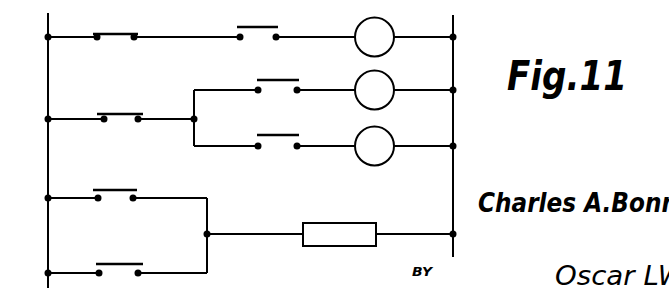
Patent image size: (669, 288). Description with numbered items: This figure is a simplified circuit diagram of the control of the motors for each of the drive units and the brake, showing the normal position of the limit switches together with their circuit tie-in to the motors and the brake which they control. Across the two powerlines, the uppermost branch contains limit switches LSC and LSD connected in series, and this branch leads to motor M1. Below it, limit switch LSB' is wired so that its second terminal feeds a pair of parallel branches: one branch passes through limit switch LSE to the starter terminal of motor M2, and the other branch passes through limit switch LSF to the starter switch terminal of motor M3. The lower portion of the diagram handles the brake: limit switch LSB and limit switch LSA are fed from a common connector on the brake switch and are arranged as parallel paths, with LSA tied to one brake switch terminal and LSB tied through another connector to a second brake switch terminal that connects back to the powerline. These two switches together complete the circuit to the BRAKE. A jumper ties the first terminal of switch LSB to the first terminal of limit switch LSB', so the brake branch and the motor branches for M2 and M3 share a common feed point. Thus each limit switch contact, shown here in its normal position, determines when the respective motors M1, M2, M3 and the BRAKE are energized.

The limit switch LSC is at (115, 28).
The limit switch LSD is at (258, 26).
The limit switch LSE is at (278, 80).
The limit switch LSF is at (278, 135).
The limit switch LSB' is at (120, 111).
The limit switch LSB is at (115, 188).
The limit switch LSA is at (120, 263).
The motor M1 is at (374, 37).
The motor M2 is at (374, 90).
The motor M3 is at (374, 146).
The brake BRAKE is at (339, 234).